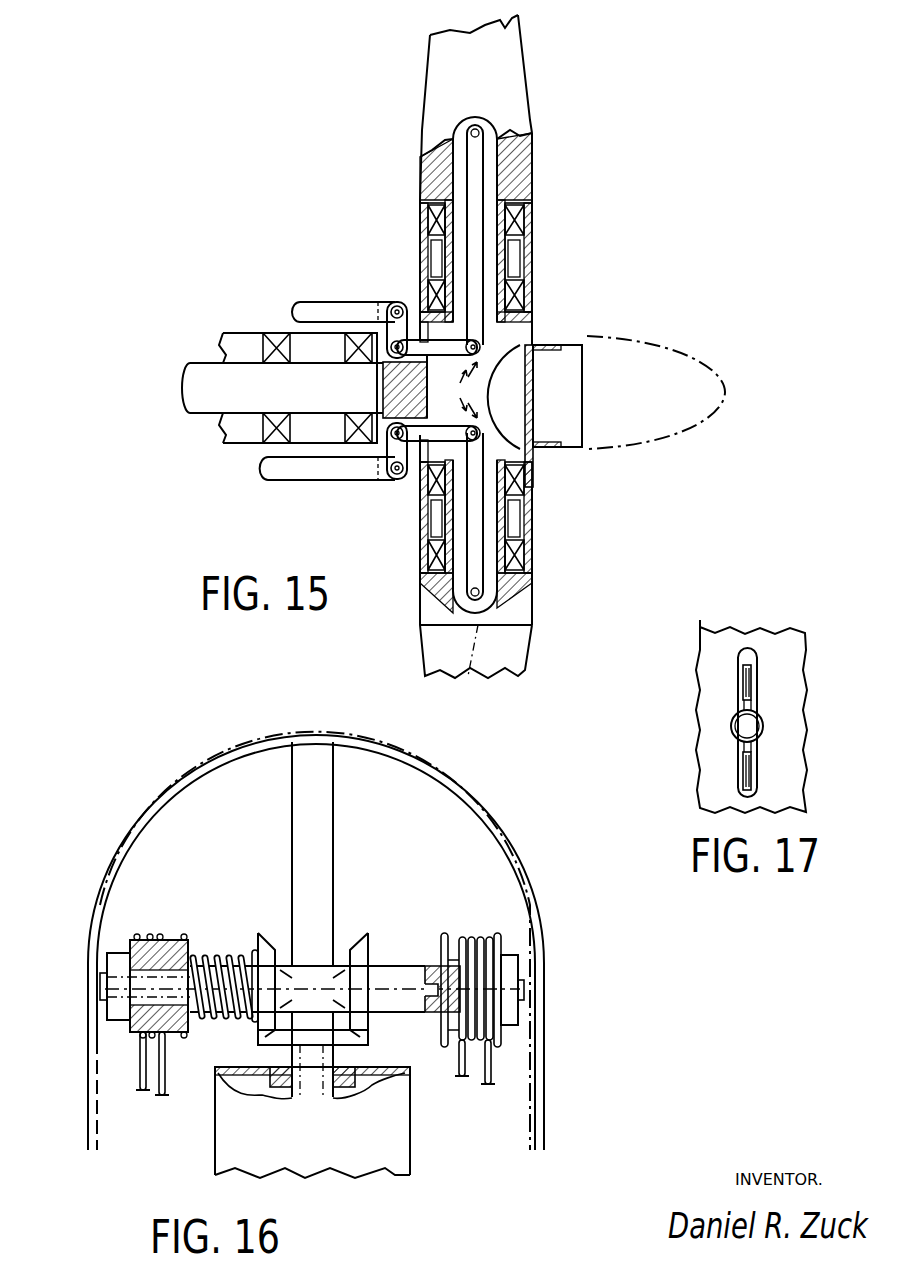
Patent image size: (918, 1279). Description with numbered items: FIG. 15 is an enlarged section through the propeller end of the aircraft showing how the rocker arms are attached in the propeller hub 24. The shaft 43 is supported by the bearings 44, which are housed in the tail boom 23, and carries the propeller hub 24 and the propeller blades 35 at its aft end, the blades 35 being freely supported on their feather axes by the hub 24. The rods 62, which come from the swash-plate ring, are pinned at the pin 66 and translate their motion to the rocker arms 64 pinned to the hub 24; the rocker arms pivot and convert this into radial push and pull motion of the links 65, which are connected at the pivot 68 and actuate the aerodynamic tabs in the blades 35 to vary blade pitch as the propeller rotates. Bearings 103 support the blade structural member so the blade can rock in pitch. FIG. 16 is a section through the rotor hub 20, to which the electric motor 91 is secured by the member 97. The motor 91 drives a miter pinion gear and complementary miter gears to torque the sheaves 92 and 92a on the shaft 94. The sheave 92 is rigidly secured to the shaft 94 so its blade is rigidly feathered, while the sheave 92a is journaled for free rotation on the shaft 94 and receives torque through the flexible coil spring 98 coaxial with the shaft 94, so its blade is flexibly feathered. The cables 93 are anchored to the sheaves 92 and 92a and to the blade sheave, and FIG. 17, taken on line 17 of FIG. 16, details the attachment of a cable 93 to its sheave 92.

In FIG. 15, the propeller blade 35 is at (510, 80).
In FIG. 15, the link 65 is at (478, 190).
In FIG. 15, the bearing 103 is at (532, 218).
In FIG. 15, the link pivot 68 is at (485, 340).
In FIG. 15, the pin 66 is at (397, 305).
In FIG. 15, the rocker arm 64 is at (385, 473).
In FIG. 15, the rod 62 is at (318, 302).
In FIG. 15, the propeller hub 24 is at (705, 386).
In FIG. 15, the bearing 44 is at (272, 345).
In FIG. 15, the shaft 43 is at (185, 396).
In FIG. 15, the tail boom 23 is at (222, 445).
In FIG. 16, the rotor hub 20 is at (98, 902).
In FIG. 16, the member 97 is at (328, 828).
In FIG. 16, the shaft 94 is at (385, 972).
In FIG. 16, the section line 17- 17 is at (452, 907).
In FIG. 16, the flexible coil spring 98 is at (240, 915).
In FIG. 16, the sheave 92a is at (130, 1032).
In FIG. 16, the sheave 92 is at (497, 945).
In FIG. 17, the sheave 92 is at (790, 745).
In FIG. 16, the cable 93 is at (140, 1078).
In FIG. 17, the cable 93 is at (760, 676).
In FIG. 16, the electric motor 91 is at (410, 1145).